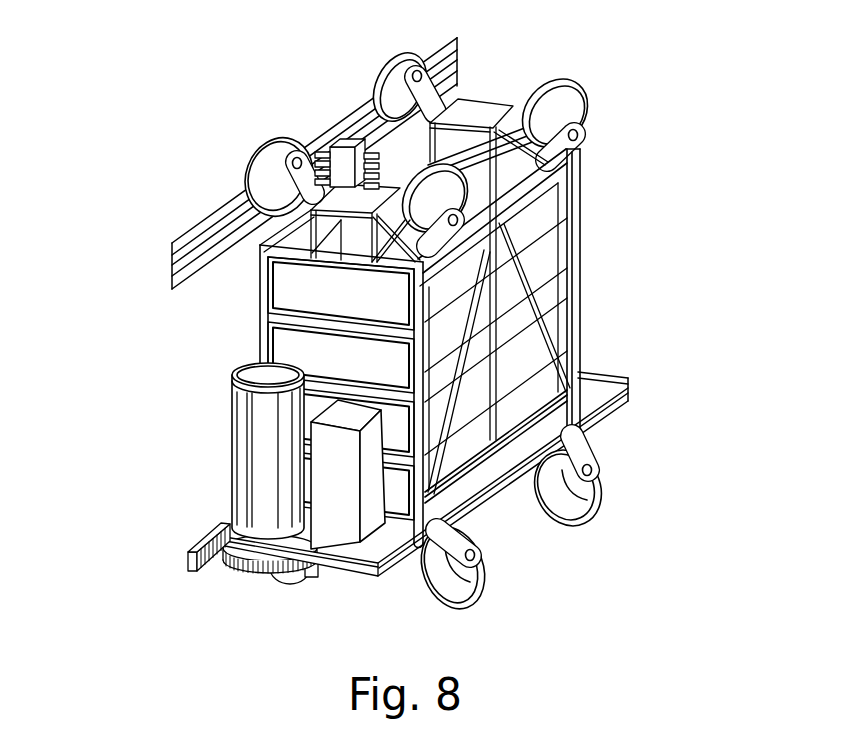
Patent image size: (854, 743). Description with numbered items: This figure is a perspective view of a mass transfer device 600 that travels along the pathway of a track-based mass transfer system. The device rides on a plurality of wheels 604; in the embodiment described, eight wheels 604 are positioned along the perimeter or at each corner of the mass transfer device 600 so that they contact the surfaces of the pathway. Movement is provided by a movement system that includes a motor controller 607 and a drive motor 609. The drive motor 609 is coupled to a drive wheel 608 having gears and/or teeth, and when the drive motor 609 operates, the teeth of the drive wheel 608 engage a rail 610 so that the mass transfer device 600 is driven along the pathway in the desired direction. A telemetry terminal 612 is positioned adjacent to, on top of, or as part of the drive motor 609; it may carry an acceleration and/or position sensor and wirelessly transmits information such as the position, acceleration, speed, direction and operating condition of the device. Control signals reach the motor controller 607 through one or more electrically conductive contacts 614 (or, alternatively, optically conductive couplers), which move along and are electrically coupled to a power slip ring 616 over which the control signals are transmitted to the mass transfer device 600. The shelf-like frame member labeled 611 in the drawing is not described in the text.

The mass transfer device 600 is at (637, 247).
The wheels 604 is at (580, 513).
The motor controller 607 is at (241, 397).
The drive wheel 608 is at (256, 565).
The drive motor 609 is at (247, 438).
The rail 610 is at (193, 552).
The shelf 611 is at (283, 290).
The telemetry terminal 612 is at (342, 528).
The electrically conductive contacts 614 is at (316, 147).
The power slip ring 616 is at (213, 238).